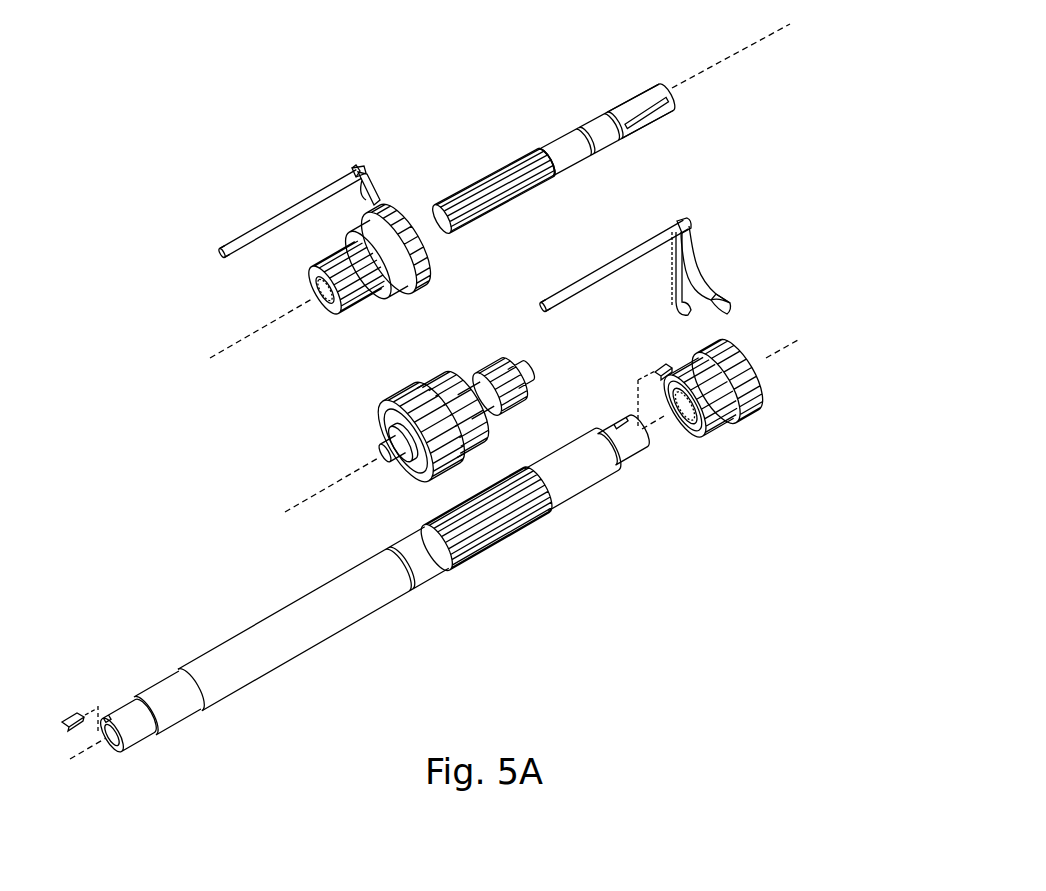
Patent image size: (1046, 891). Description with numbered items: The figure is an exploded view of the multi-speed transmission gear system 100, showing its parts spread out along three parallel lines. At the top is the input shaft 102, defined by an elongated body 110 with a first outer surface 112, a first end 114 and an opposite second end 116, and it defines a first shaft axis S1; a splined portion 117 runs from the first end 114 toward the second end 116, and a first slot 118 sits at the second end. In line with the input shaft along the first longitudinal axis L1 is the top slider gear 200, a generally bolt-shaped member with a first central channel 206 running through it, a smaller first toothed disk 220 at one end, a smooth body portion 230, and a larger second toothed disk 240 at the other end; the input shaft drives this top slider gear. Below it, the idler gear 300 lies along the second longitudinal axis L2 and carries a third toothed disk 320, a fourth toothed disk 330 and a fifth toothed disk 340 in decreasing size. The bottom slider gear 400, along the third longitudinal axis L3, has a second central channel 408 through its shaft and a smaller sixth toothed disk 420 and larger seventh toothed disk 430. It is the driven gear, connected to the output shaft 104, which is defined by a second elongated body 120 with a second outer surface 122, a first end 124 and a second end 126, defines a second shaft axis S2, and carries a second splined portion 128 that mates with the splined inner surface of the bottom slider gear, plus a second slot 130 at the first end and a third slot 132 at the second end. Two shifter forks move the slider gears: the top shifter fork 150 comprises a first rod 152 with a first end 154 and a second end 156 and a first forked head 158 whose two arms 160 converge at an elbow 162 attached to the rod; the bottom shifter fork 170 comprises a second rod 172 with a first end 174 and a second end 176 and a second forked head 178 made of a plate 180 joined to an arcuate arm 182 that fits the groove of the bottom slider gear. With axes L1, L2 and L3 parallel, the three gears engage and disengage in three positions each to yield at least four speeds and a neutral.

The multi-speed transmission gear system 100 is at (232, 50).
The input shaft 102 is at (598, 151).
The output shaft 104 is at (367, 559).
The elongated body 110 is at (598, 177).
The first outer surface 112 is at (557, 175).
The first end 114 is at (494, 194).
The second end 116 is at (687, 117).
The splined portion 117 is at (488, 170).
The first slot 118 is at (660, 119).
The second elongated body 120 is at (379, 583).
The second outer surface 122 is at (367, 605).
The first end 124 is at (132, 682).
The second end 126 is at (638, 475).
The second splined portion 128 is at (500, 540).
The second slot 130 is at (112, 720).
The third slot 132 is at (627, 423).
The top shifter fork 150 is at (302, 183).
The first rod 152 is at (259, 214).
The first end 154 is at (217, 250).
The second end 156 is at (349, 163).
The first forked head 158 is at (384, 157).
The arms 160 is at (380, 192).
The elbow 162 is at (365, 176).
The bottom shifter fork 170 is at (653, 268).
The second rod 172 is at (614, 299).
The first end 174 is at (560, 323).
The second end 176 is at (672, 213).
The second forked head 178 is at (707, 239).
The plate 180 is at (673, 283).
The arcuate arm 182 is at (723, 300).
The top slider gear 200 is at (355, 277).
The first central channel 206 is at (322, 298).
The first toothed disk 220 is at (341, 298).
The body portion 230 is at (377, 288).
The second toothed disk 240 is at (418, 275).
The idler gear 300 is at (416, 432).
The third toothed disk 320 is at (407, 482).
The fourth toothed disk 330 is at (462, 464).
The fifth toothed disk 340 is at (483, 368).
The bottom slider gear 400 is at (740, 423).
The second central channel 408 is at (682, 420).
The sixth toothed disk 420 is at (709, 412).
The seventh toothed disk 430 is at (758, 402).
The first shaft axis S1 is at (720, 60).
The second shaft axis S2 is at (78, 756).
The first longitudinal axis L1 is at (225, 348).
The second longitudinal axis L2 is at (293, 508).
The third longitudinal axis L3 is at (780, 347).